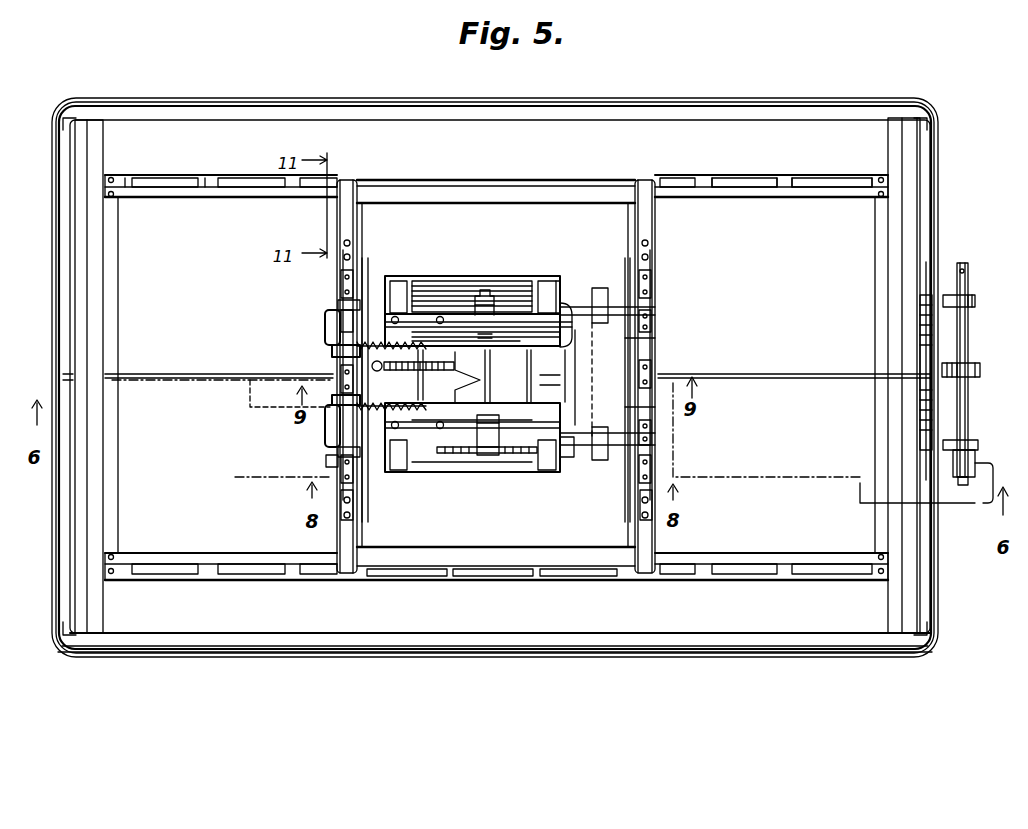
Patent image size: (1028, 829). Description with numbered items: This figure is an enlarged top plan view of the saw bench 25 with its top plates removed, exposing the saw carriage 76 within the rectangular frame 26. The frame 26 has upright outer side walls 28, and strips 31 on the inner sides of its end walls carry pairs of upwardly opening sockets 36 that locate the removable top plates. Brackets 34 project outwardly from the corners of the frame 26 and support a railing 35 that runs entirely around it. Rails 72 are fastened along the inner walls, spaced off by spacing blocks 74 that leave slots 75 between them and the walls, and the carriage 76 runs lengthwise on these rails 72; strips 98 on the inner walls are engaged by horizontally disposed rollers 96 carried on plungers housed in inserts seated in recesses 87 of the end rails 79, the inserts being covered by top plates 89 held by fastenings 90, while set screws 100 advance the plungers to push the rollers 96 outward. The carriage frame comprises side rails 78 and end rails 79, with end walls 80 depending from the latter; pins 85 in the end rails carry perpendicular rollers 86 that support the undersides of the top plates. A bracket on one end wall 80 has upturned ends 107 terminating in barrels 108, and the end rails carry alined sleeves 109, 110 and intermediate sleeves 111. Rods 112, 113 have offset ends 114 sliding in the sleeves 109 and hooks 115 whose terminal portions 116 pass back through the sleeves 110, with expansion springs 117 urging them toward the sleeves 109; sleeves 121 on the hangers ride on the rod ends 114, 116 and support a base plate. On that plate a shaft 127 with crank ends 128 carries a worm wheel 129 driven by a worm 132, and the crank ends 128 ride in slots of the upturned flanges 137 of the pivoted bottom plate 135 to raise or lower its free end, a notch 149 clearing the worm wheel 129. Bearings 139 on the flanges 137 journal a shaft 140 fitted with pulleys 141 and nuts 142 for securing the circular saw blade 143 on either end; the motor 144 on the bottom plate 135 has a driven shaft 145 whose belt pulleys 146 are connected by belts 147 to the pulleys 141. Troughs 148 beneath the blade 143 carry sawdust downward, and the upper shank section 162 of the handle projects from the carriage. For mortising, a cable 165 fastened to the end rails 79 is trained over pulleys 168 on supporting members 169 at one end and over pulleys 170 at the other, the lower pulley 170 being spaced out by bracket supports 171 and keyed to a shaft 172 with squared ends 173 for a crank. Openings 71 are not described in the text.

The saw bench 25 is at (196, 636).
The frame 26 is at (392, 627).
The outer side walls 28 is at (576, 633).
The strips 31 is at (888, 262).
The brackets 34 is at (80, 118).
The railing 35 is at (296, 100).
The sockets 36 is at (113, 192).
The lower rail 71 is at (497, 578).
The rails 72 is at (233, 183).
The spacing blocks 74 is at (150, 187).
The slots 75 is at (748, 185).
The saw carriage 76 is at (326, 460).
The side rails 78 is at (506, 200).
The end rails 79 is at (658, 286).
The end walls 80 is at (360, 540).
The pins 85 is at (656, 276).
The rollers 86 is at (340, 372).
The recesses 87 is at (652, 262).
The top plates 89 is at (338, 200).
The fastenings 90 is at (352, 255).
The rollers 96 is at (352, 180).
The strips 98 is at (410, 178).
The set screws 100 is at (344, 243).
The upturned ends 107 is at (598, 286).
The barrels 108 is at (594, 328).
The sleeves 109 is at (660, 316).
The sleeves 110 is at (338, 300).
The sleeves 111 is at (336, 334).
The rod 112 is at (548, 376).
The rod 113 is at (534, 378).
The offset ends 114 is at (660, 338).
The hooks 115 is at (324, 330).
The terminal portions 116 is at (392, 278).
The springs 117 is at (442, 278).
The sleeves 121 is at (425, 282).
The shaft 127 is at (424, 376).
The crank ends 128 is at (450, 320).
The worm wheel 129 is at (391, 376).
The worm 132 is at (332, 350).
The bottom plate 135 is at (562, 300).
The flanges 137 is at (350, 400).
The bearings 139 is at (398, 372).
The shaft 140 is at (500, 296).
The pulleys 141 is at (492, 378).
The nuts 142 is at (505, 300).
The circular saw blade 143 is at (454, 364).
The motor 144 is at (568, 392).
The driven shaft 145 is at (590, 308).
The belt pulleys 146 is at (580, 420).
The belts 147 is at (545, 474).
The troughs 148 is at (506, 275).
The notch 149 is at (472, 389).
The upper shank section 162 is at (572, 458).
The cable 165 is at (806, 374).
The pulleys 168 is at (70, 378).
The supporting members 169 is at (70, 368).
The pulleys 170 is at (920, 378).
The bracket supports 171 is at (975, 295).
The shaft 172 is at (970, 340).
The squared ends 173 is at (968, 263).